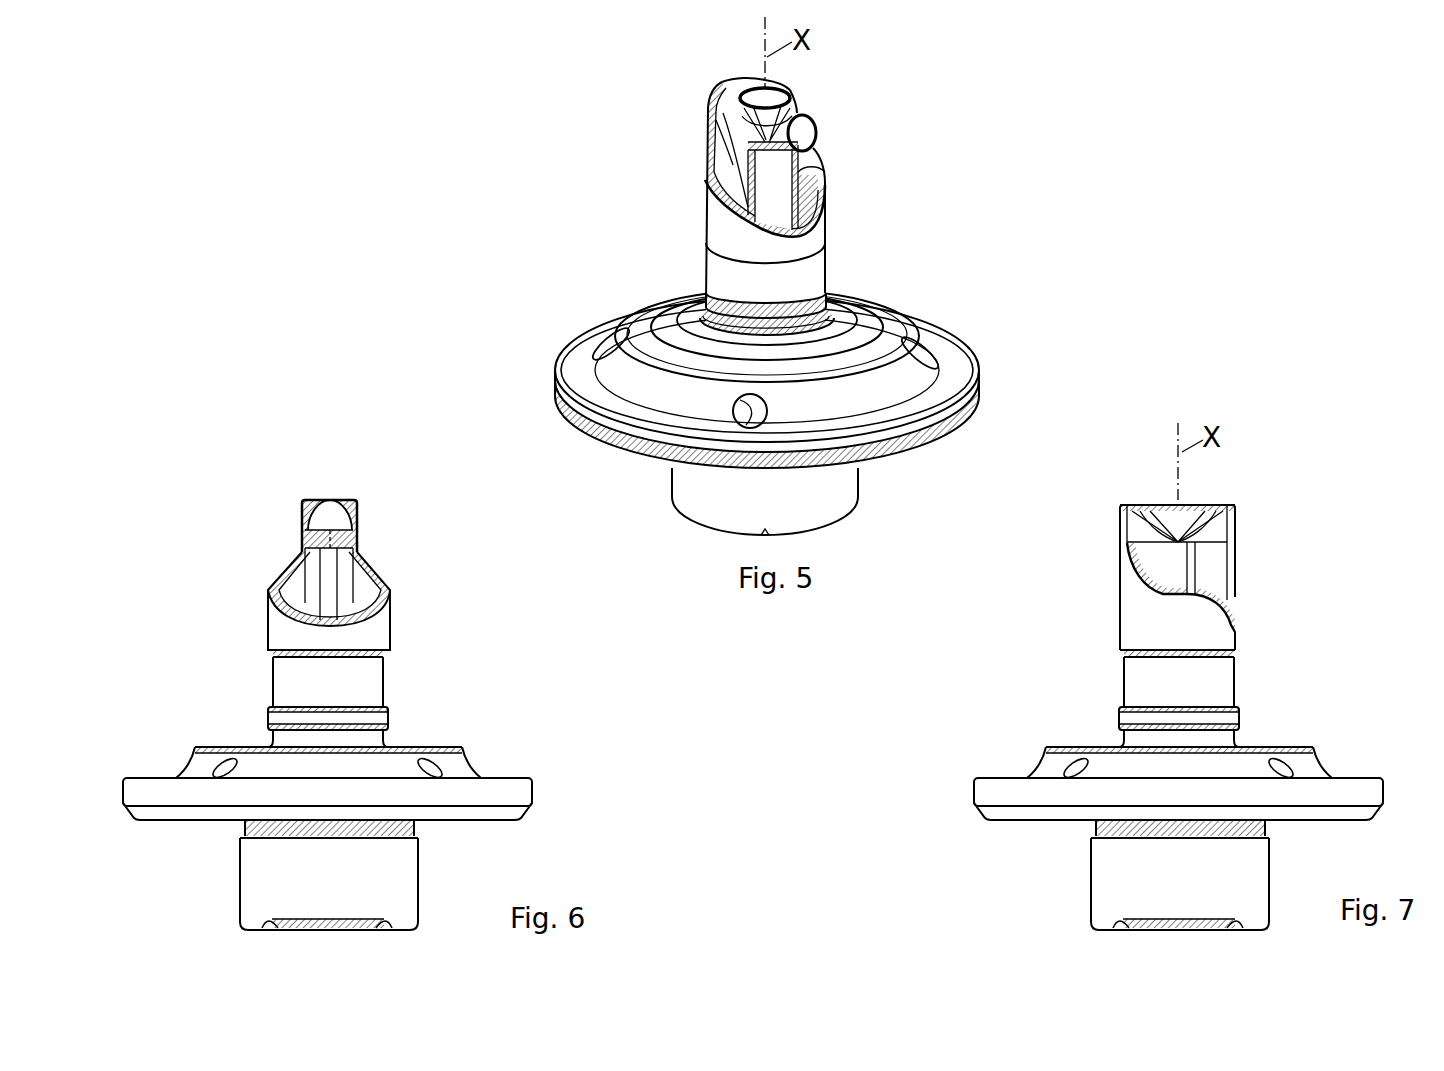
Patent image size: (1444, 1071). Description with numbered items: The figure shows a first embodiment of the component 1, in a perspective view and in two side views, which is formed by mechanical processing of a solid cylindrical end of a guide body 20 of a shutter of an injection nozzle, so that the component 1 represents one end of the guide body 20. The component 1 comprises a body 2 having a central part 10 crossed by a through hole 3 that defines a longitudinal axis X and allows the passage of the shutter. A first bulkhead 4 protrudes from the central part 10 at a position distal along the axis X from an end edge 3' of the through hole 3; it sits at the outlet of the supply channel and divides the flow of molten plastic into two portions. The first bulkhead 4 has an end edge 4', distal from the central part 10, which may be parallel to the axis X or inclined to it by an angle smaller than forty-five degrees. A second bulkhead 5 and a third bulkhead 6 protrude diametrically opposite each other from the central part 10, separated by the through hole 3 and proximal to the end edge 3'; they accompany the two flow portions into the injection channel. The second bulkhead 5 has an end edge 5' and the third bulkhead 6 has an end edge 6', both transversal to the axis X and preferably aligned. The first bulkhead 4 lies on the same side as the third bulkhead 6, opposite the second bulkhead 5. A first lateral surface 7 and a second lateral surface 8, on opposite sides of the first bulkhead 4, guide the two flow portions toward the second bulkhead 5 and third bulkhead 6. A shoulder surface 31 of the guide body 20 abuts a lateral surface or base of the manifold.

In FIG. 5, the component 1 is at (842, 110).
In FIG. 5, the body 2 is at (747, 162).
In FIG. 6, the body 2 is at (363, 520).
In FIG. 7, the body 2 is at (1147, 537).
In FIG. 5, the through hole 3 is at (789, 81).
In FIG. 5, the end edge of the through hole 3' is at (720, 118).
In FIG. 6, the end edge of the through hole 3' is at (353, 480).
In FIG. 5, the first bulkhead 4 is at (785, 259).
In FIG. 6, the first bulkhead 4 is at (268, 649).
In FIG. 7, the first bulkhead 4 is at (1216, 626).
In FIG. 5, the end edge of the first bulkhead 4' is at (823, 212).
In FIG. 6, the end edge of the first bulkhead 4' is at (414, 616).
In FIG. 7, the end edge of the first bulkhead 4' is at (1232, 587).
In FIG. 5, the second bulkhead 5 is at (699, 68).
In FIG. 7, the second bulkhead 5 is at (1137, 478).
In FIG. 5, the end edge of the second bulkhead 5' is at (749, 62).
In FIG. 7, the end edge of the second bulkhead 5' is at (1152, 467).
In FIG. 5, the third bulkhead 6 is at (827, 138).
In FIG. 6, the third bulkhead 6 is at (272, 491).
In FIG. 7, the third bulkhead 6 is at (1242, 487).
In FIG. 5, the end edge of the third bulkhead 6' is at (834, 72).
In FIG. 6, the end edge of the third bulkhead 6' is at (321, 467).
In FIG. 7, the end edge of the third bulkhead 6' is at (1224, 465).
In FIG. 5, the first lateral surface 7 is at (742, 200).
In FIG. 6, the first lateral surface 7 is at (292, 578).
In FIG. 7, the first lateral surface 7 is at (1137, 563).
In FIG. 5, the second lateral surface 8 is at (810, 187).
In FIG. 6, the second lateral surface 8 is at (363, 580).
In FIG. 5, the central part 10 is at (737, 152).
In FIG. 7, the central part 10 is at (1173, 558).
In FIG. 5, the guide body 20 is at (1003, 222).
In FIG. 6, the guide body 20 is at (575, 765).
In FIG. 7, the guide body 20 is at (995, 722).
In FIG. 6, the shoulder surface 31 is at (243, 747).